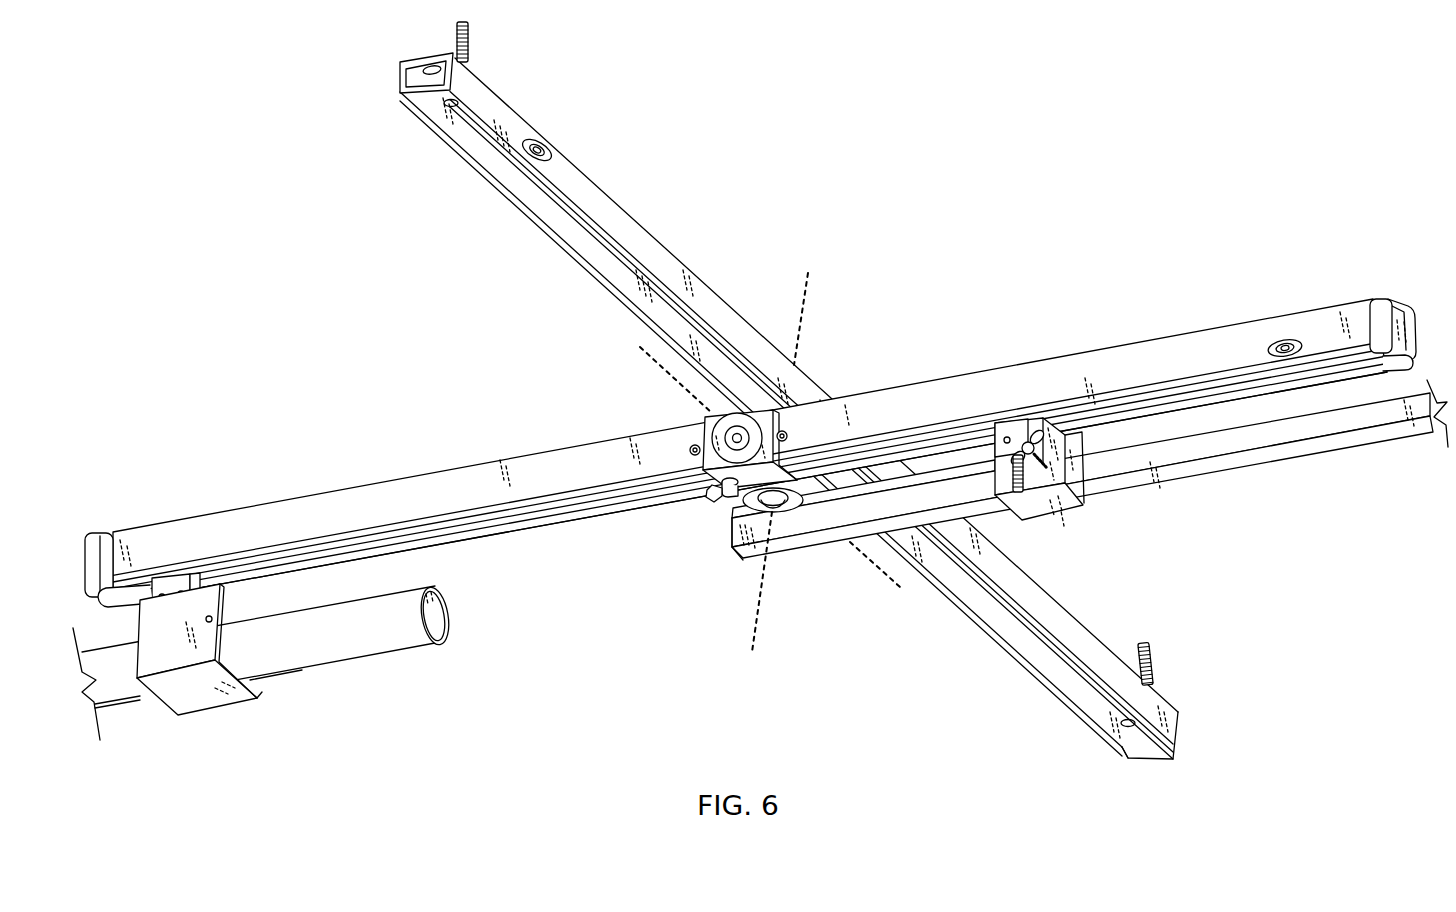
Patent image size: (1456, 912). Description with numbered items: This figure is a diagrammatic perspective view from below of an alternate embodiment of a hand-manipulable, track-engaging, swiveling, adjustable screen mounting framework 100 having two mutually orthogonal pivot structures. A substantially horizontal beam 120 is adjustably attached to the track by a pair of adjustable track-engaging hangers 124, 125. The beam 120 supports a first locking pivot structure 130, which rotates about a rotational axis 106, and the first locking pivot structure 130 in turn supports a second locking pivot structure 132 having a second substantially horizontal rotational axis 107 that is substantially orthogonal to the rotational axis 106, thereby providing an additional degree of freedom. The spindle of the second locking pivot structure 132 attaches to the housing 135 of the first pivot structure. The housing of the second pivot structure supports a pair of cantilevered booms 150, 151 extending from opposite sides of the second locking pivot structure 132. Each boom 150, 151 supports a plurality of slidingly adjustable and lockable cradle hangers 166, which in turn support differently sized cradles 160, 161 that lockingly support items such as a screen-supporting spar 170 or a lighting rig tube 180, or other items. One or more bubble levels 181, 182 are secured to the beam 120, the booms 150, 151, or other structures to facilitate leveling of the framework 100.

The screen mounting framework 100 is at (1010, 160).
The rotational axis 106 is at (812, 292).
The second substantially horizontal rotational axis 107 is at (658, 368).
The substantially horizontal beam 120 is at (610, 186).
The adjustable track-engaging hanger 124 is at (470, 34).
The adjustable track-engaging hanger 125 is at (1153, 655).
The first locking pivot structure 130 is at (740, 517).
The second locking pivot structure 132 is at (688, 456).
The housing of the first pivot structure 135 is at (803, 513).
The cantilevered boom 150 is at (265, 505).
The cantilevered boom 151 is at (1170, 333).
The cradle 160 is at (205, 705).
The cradle 161 is at (1058, 515).
The cradle hanger 166 is at (1020, 423).
The screen-supporting spar 170 is at (1219, 467).
The lighting rig tube 180 is at (381, 645).
The bubble level 181 is at (542, 144).
The bubble level 182 is at (1286, 340).